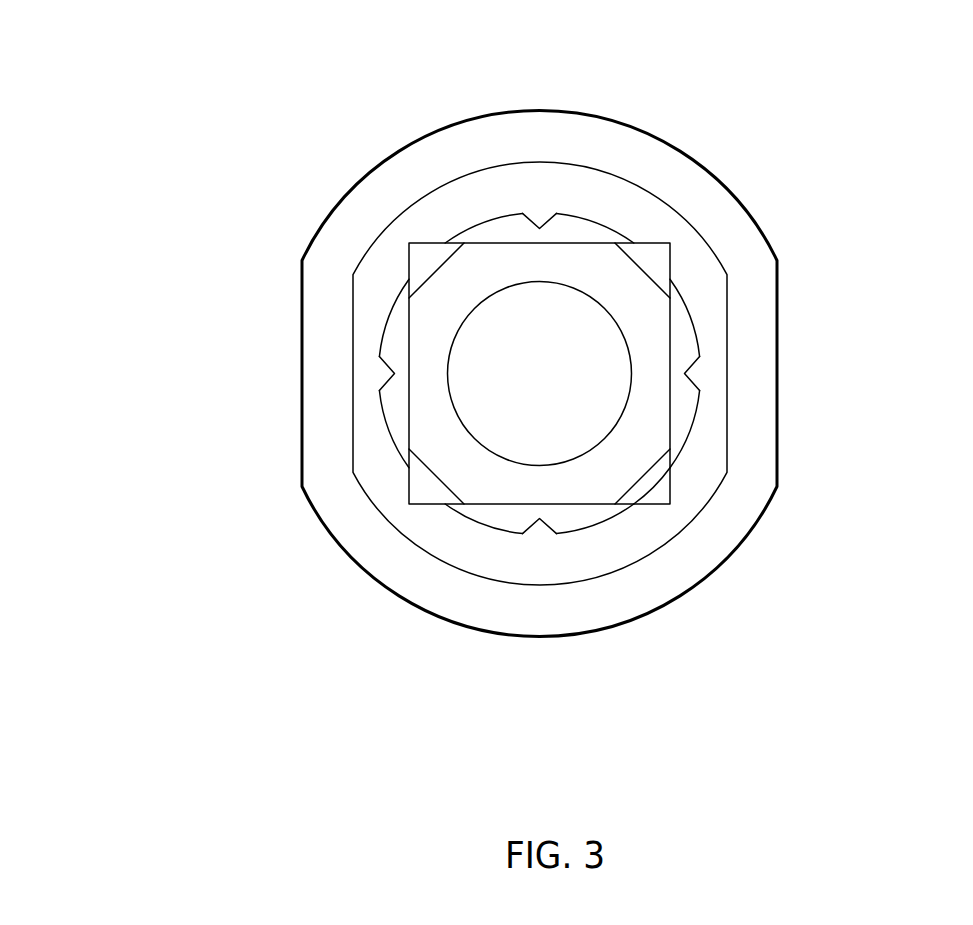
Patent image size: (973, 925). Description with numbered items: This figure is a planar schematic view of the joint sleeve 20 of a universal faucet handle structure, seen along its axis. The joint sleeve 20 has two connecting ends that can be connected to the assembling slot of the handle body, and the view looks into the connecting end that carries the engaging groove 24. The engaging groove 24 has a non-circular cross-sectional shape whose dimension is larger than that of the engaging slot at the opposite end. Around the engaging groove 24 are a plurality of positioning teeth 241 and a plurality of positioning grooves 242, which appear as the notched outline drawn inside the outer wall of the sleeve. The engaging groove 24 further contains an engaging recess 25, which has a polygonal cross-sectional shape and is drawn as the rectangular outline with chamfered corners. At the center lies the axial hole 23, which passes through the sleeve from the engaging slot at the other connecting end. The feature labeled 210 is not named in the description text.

The joint sleeve 20 is at (398, 152).
The receiving hole 210 is at (323, 320).
The axial hole 23 is at (540, 374).
The engaging groove 24 is at (390, 433).
The positioning teeth 241 is at (557, 528).
The positioning grooves 242 is at (420, 505).
The engaging recess 25 is at (672, 331).